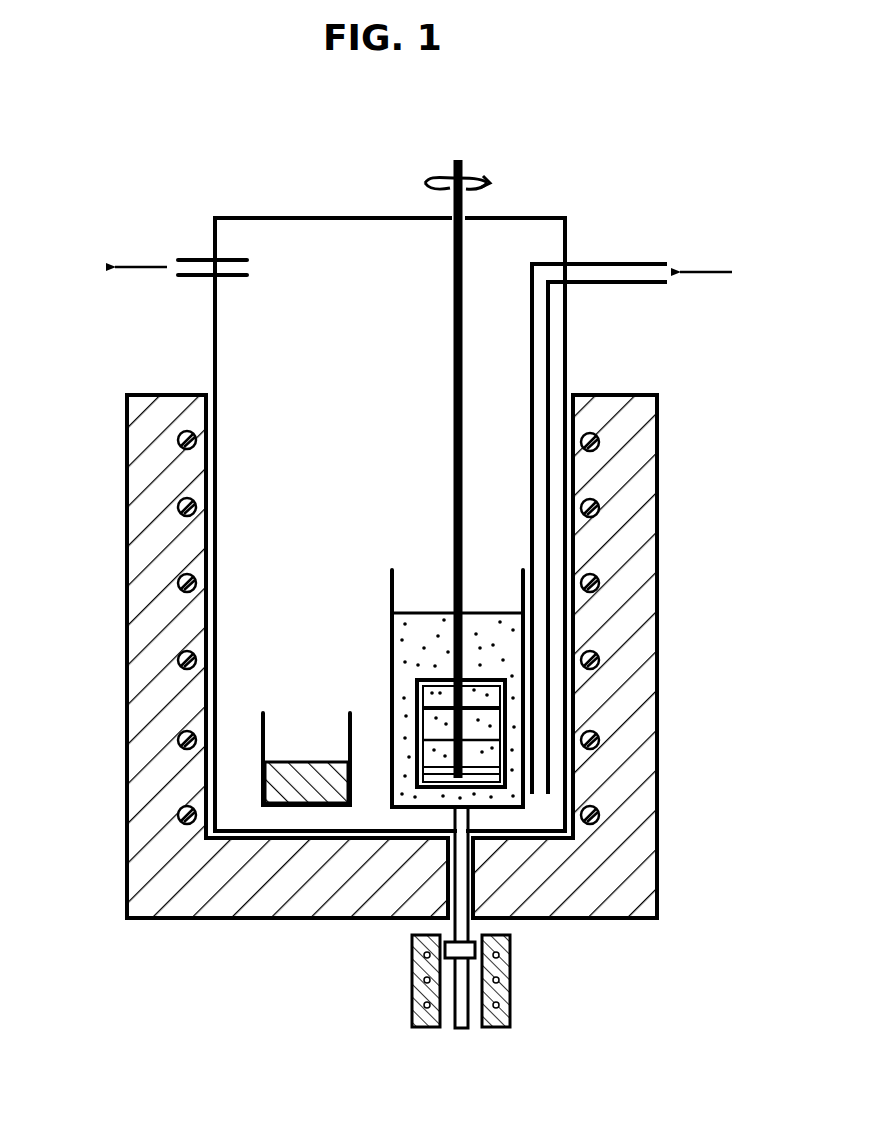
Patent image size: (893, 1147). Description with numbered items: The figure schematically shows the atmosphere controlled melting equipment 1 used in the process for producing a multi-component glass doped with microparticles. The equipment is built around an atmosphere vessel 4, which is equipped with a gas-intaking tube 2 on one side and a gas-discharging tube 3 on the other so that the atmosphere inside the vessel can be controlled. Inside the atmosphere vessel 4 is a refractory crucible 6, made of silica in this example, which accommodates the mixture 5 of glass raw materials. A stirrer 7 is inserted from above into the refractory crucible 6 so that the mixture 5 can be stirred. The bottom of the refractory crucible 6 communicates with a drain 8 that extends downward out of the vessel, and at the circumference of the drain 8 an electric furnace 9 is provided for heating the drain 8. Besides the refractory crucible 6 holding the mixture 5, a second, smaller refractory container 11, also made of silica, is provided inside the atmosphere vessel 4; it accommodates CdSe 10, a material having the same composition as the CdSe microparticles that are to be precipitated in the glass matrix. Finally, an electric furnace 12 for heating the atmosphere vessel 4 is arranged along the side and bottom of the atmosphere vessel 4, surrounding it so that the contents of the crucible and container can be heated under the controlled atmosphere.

The atmosphere controlled melting equipment 1 is at (523, 200).
The gas-intaking tube 2 is at (632, 284).
The gas-discharging tube 3 is at (196, 282).
The atmosphere vessel 4 is at (565, 228).
The mixture 5 is at (428, 620).
The refractory crucible 6 is at (392, 600).
The stirrer 7 is at (452, 312).
The drain 8 is at (460, 1012).
The electric furnace 9 is at (410, 970).
The CdSe 10 is at (325, 762).
The refractory container 11 is at (262, 730).
The electric furnace 12 is at (127, 488).